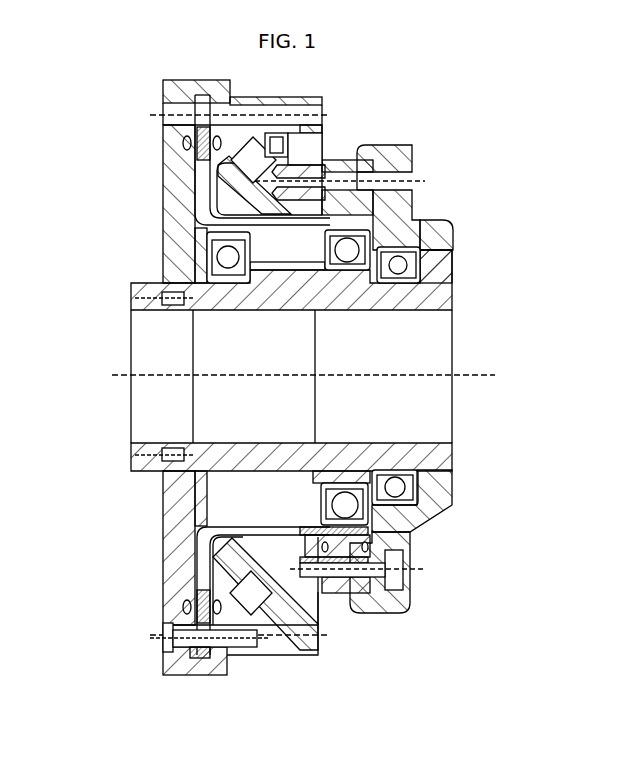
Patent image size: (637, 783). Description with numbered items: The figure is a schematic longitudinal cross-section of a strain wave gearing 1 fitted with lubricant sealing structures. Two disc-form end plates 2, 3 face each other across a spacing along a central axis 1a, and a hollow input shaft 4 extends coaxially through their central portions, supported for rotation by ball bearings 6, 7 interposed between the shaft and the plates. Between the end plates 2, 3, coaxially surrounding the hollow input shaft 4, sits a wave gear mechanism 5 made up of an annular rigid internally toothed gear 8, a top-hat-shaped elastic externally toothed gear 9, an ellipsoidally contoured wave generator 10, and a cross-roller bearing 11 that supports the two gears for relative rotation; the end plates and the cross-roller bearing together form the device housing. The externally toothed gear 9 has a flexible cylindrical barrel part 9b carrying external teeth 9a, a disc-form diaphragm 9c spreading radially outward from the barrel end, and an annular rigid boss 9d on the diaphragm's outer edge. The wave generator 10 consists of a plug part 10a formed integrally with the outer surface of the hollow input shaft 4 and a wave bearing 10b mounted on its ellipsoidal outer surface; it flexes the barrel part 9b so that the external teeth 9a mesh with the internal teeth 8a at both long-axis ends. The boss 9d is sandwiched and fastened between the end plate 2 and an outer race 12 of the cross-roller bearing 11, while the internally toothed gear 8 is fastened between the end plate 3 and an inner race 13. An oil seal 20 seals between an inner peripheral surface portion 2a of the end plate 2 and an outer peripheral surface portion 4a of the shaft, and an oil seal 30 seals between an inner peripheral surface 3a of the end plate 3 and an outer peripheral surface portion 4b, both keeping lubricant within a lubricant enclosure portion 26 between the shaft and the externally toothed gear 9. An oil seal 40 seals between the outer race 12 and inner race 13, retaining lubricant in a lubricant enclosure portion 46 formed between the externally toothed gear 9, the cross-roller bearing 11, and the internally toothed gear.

The strain wave gearing 1 is at (70, 205).
The central axis 1a is at (115, 385).
The end plate 2 is at (163, 140).
The inner peripheral surface portion of the end plate 2a is at (185, 270).
The end plate 3 is at (415, 203).
The inner peripheral surface of the end plate 3a is at (430, 272).
The hollow input shaft 4 is at (127, 325).
The outer peripheral surface portion on one axial-end side of the hollow input shaft 4a is at (160, 283).
The outer peripheral surface portion on the other axial-end side of the hollow input 4b is at (460, 275).
The wave gear mechanism 5 is at (347, 125).
The ball bearing 6 is at (200, 250).
The ball bearing 7 is at (412, 242).
The internally toothed gear 8 is at (338, 605).
The internal teeth 8a is at (345, 605).
The externally toothed gear 9 is at (273, 517).
The external teeth 9a is at (318, 487).
The cylindrical barrel part 9b is at (312, 485).
The diaphragm 9c is at (203, 560).
The boss 9d is at (210, 568).
The wave generator 10 is at (383, 512).
The plug part 10a is at (335, 472).
The wave bearing 10b is at (387, 517).
The cross-roller bearing 11 is at (303, 688).
The outer race 12 is at (275, 640).
The inner race 13 is at (240, 647).
The oil seal 20 is at (160, 265).
The lubricant enclosure portion 26 is at (278, 262).
The oil seal 30 is at (460, 267).
The oil seal 40 is at (330, 150).
The lubricant enclosure portion 46 is at (210, 185).